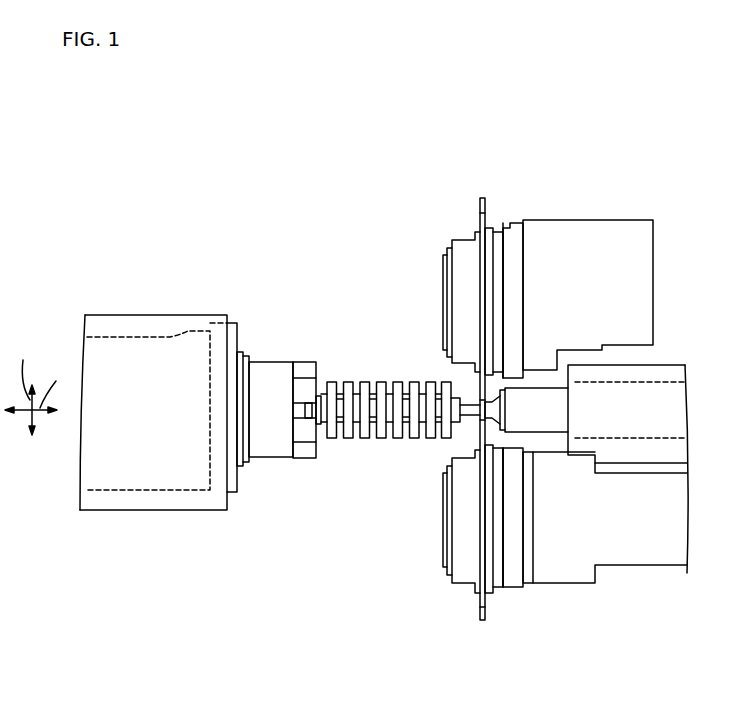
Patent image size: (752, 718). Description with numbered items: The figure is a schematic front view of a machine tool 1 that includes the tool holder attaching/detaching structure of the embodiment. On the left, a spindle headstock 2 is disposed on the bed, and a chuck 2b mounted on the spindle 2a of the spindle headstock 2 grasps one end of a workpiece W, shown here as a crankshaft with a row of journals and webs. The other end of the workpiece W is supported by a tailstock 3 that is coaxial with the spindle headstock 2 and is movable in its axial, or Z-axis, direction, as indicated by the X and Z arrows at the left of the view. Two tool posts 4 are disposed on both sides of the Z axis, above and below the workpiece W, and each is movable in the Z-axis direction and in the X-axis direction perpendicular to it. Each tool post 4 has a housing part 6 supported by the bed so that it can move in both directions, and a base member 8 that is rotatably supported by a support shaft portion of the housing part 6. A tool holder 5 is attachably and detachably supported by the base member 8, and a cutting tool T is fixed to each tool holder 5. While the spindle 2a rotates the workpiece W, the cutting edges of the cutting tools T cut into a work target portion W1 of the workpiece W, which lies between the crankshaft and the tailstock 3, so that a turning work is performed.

The machine tool 1 is at (348, 184).
The spindle headstock 2 is at (148, 285).
The spindle 2a is at (270, 361).
The chuck 2b is at (304, 363).
The tailstock 3 is at (665, 354).
The tool post 4 is at (578, 188).
The tool holder 5 is at (470, 215).
The housing part 6 is at (632, 220).
The base member 8 is at (505, 217).
The cutting tool T is at (483, 197).
The workpiece W is at (384, 370).
The work target portion W1 is at (478, 408).